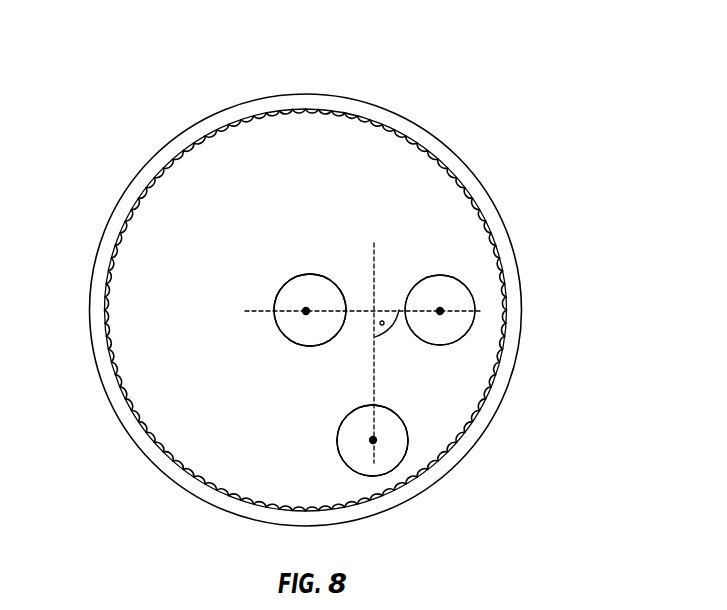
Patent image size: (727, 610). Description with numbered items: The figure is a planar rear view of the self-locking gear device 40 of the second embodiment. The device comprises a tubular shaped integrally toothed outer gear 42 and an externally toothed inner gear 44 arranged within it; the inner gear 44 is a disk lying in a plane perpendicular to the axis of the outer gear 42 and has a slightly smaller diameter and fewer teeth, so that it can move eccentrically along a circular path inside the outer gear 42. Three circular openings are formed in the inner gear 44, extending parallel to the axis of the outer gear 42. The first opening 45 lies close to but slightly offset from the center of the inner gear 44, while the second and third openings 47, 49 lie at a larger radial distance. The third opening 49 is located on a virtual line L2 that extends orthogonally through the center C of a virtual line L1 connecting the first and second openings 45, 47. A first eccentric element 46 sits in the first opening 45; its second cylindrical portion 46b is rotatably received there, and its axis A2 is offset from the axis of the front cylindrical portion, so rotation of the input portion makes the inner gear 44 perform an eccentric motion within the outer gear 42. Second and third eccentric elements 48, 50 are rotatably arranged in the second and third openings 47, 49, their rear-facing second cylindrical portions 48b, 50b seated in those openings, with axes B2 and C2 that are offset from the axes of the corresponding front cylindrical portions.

The self-locking gear device 40 is at (304, 303).
The tubular shaped integrally toothed outer gear 42 is at (518, 258).
The externally toothed inner gear 44 is at (123, 311).
The first opening 45 is at (283, 346).
The first eccentric element 46 is at (289, 268).
The second cylindrical portion 46b is at (315, 290).
The second opening 47 is at (411, 354).
The second eccentric element 48 is at (403, 269).
The second cylindrical portion 48b is at (425, 290).
The third opening 49 is at (316, 459).
The third eccentric element 50 is at (318, 422).
The second cylindrical portion 50b is at (383, 420).
The axis of the second cylindrical portion A2 is at (306, 313).
The axis of the second cylindrical portion B2 is at (441, 310).
The axis of the second cylindrical portion C2 is at (374, 440).
The center of virtual line L1 C is at (373, 318).
The virtual line L1 is at (356, 323).
The virtual line L2 is at (363, 347).